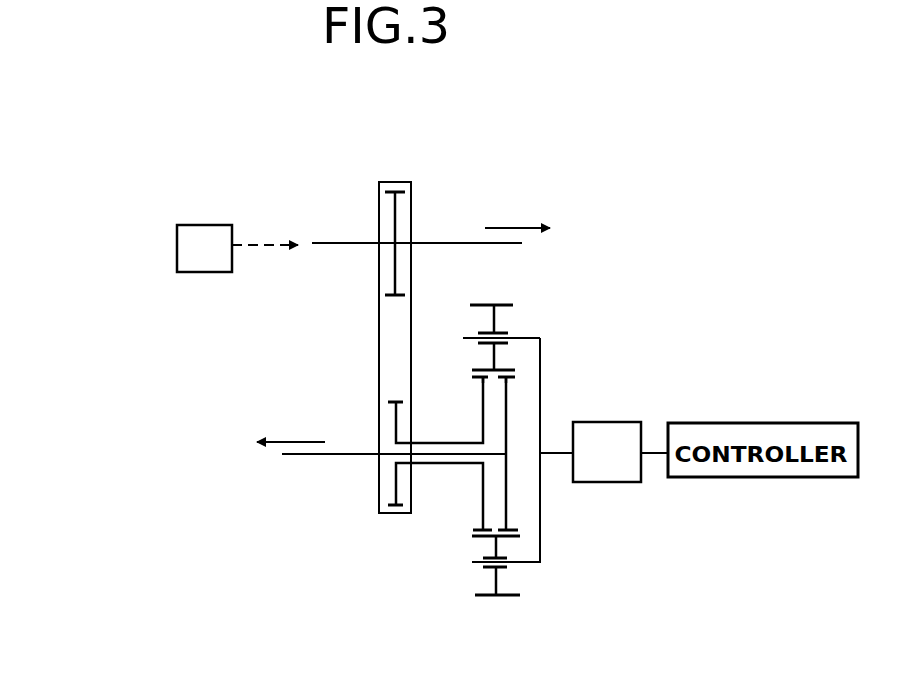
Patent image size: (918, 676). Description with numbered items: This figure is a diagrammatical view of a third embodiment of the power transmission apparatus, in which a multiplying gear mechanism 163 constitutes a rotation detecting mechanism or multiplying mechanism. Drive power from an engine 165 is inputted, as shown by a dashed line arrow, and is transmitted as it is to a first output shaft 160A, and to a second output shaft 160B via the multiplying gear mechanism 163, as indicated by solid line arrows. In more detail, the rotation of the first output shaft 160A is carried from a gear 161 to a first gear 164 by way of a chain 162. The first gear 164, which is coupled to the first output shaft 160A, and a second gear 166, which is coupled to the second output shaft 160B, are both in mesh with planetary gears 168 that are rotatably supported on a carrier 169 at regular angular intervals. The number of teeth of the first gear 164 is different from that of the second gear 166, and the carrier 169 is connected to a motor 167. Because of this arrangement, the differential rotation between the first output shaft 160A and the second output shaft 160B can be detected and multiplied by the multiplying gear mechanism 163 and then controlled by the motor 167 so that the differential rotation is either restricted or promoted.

The first output shaft 160A is at (440, 242).
The second output shaft 160B is at (303, 458).
The gear 161 is at (393, 223).
The chain 162 is at (377, 337).
The multiplying gear mechanism 163 is at (541, 326).
The first gear 164 is at (483, 415).
The engine 165 is at (208, 225).
The second gear 166 is at (508, 498).
The motor 167 is at (628, 421).
The planetary gears 168 is at (493, 304).
The carrier 169 is at (541, 545).